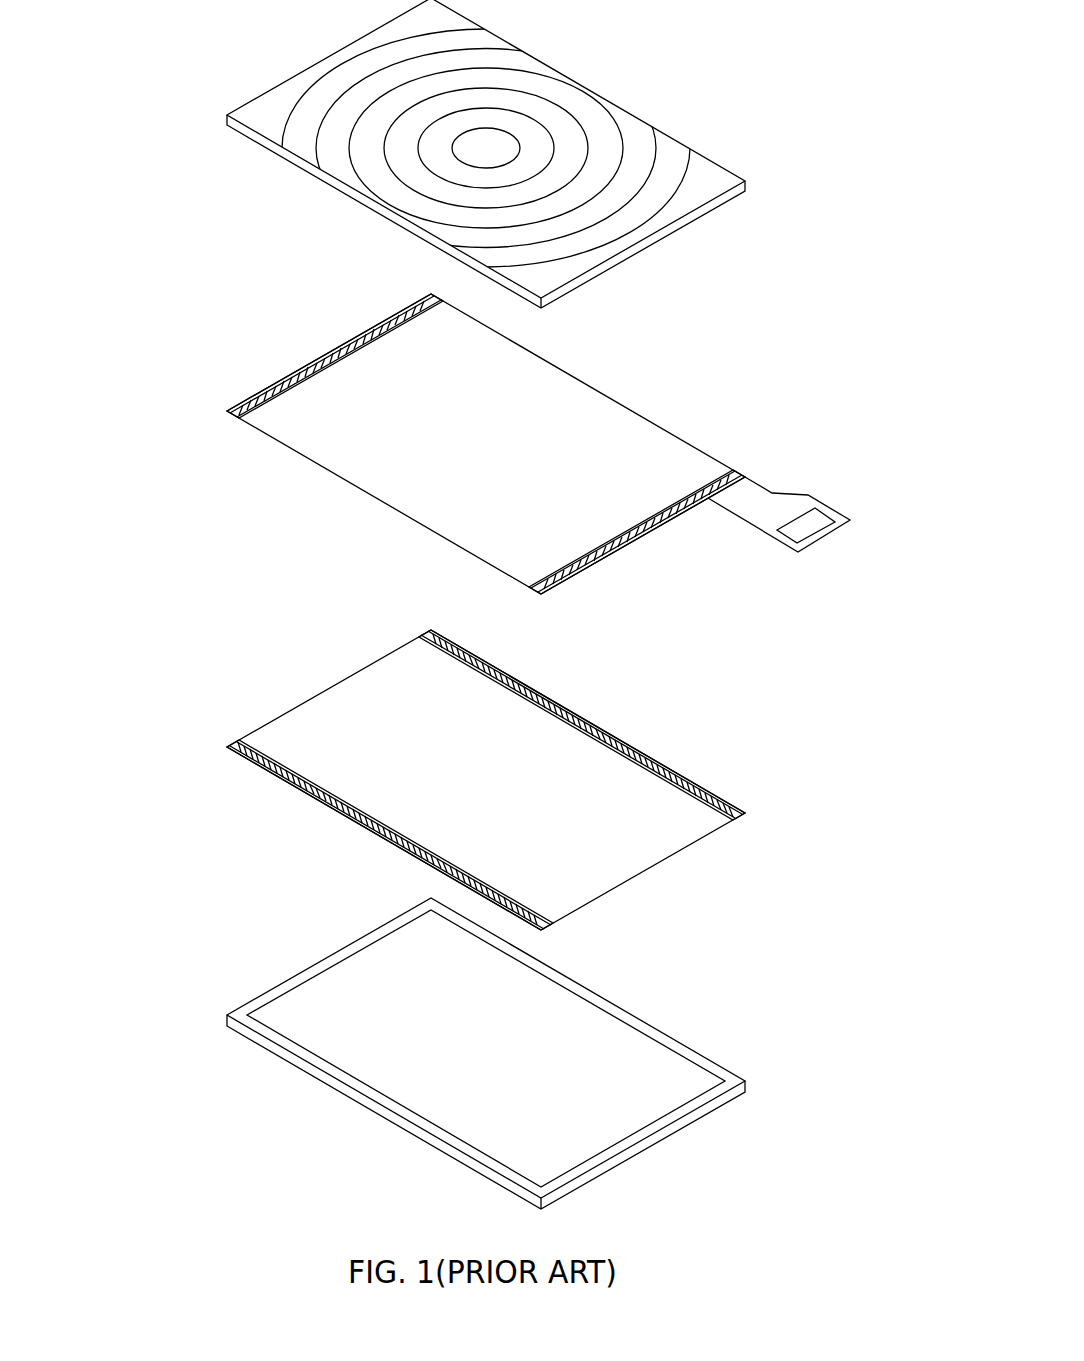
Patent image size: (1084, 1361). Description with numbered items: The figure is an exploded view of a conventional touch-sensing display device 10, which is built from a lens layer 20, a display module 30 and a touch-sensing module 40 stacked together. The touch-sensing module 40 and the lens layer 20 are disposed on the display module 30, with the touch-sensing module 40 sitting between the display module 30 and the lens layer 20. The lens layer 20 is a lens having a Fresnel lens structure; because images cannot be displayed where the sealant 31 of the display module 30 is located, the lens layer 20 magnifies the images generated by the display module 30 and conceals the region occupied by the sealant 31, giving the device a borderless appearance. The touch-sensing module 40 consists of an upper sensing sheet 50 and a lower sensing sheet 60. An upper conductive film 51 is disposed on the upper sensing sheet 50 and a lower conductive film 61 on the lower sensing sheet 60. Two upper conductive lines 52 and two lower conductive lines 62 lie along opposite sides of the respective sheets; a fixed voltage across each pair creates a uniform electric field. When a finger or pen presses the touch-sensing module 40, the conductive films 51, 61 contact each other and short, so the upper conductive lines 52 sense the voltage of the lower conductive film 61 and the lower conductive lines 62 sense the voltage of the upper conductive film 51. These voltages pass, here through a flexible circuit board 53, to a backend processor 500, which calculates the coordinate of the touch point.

The touch-sensing display device 10 is at (750, 26).
The lens layer 20 is at (233, 79).
The display module 30 is at (455, 1053).
The sealant 31 is at (267, 1032).
The touch-sensing module 40 is at (163, 333).
The upper sensing sheet 50 is at (523, 444).
The upper conductive film 51 is at (598, 407).
The upper conductive lines 52 is at (403, 316).
The flexible circuit board 53 is at (752, 503).
The backend processor 500 is at (823, 532).
The lower sensing sheet 60 is at (454, 780).
The lower conductive film 61 is at (650, 847).
The lower conductive lines 62 is at (625, 743).